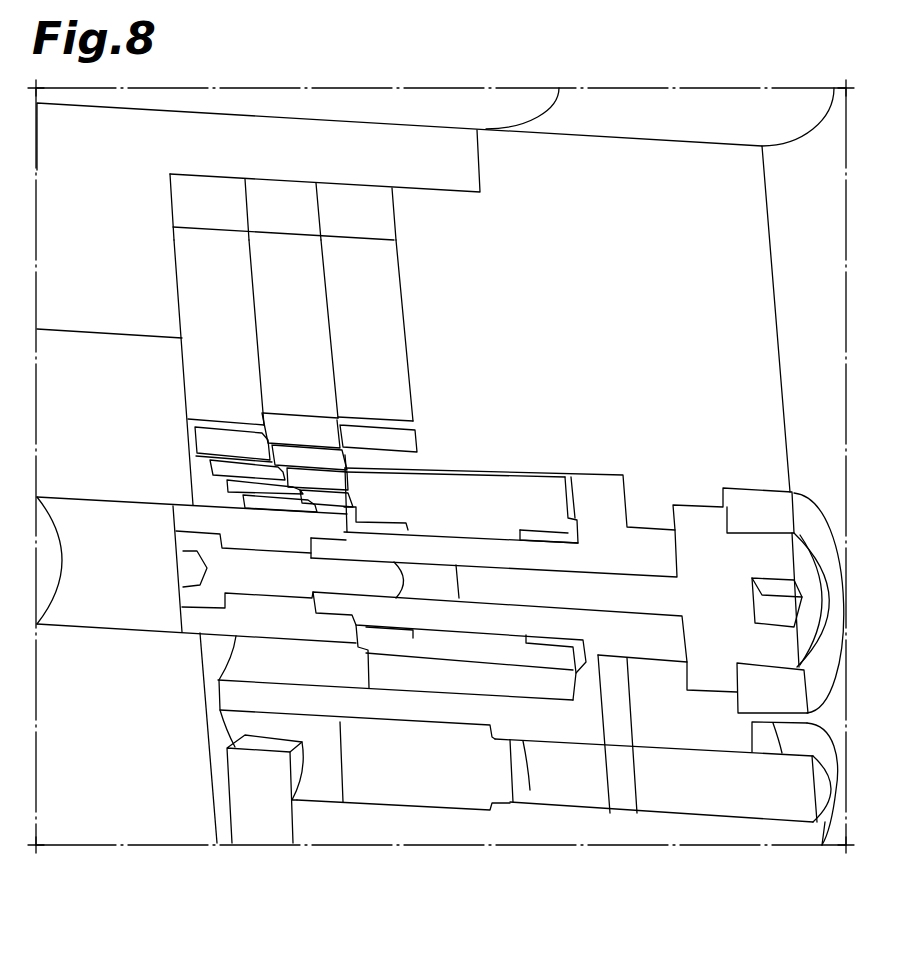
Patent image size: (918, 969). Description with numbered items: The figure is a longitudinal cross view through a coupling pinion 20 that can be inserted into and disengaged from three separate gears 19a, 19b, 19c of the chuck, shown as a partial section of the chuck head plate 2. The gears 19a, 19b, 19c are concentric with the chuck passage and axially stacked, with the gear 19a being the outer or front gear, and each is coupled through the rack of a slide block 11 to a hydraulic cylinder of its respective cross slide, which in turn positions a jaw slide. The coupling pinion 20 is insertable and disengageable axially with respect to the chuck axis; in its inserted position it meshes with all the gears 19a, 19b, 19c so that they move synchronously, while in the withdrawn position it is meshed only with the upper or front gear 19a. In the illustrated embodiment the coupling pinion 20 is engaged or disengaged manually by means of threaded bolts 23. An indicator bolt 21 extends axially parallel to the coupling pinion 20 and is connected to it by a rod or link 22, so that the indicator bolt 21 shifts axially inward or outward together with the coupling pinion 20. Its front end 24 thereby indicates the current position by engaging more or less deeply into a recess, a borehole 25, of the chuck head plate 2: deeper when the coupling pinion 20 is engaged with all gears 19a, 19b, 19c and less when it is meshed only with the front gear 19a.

The chuck head plate 2 is at (663, 139).
The slide block 11 is at (206, 197).
The gear 19a is at (377, 353).
The gear 19b is at (307, 373).
The gear 19c is at (245, 376).
The coupling pinion 20 is at (466, 497).
The indicator bolt 21 is at (467, 785).
The rod or link 22 is at (613, 681).
The threaded bolts 23 is at (596, 587).
The front end 24 is at (785, 787).
The recess 25 is at (828, 823).